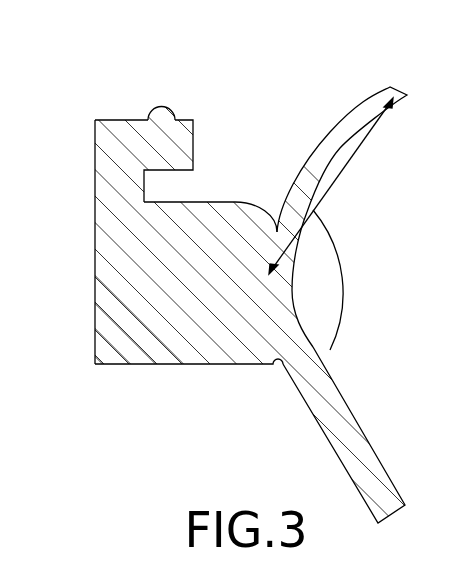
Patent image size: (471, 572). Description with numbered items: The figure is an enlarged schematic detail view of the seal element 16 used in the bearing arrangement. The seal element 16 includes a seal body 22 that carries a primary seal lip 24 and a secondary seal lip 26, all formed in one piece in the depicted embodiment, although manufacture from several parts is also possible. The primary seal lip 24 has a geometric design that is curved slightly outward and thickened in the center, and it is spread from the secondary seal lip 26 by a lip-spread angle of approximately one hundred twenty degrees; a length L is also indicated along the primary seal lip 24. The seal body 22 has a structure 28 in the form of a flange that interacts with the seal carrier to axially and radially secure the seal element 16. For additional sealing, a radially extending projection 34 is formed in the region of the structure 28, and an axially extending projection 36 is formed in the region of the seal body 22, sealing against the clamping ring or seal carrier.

The seal element 16 is at (234, 97).
The seal body 22 is at (138, 320).
The primary seal lip 24 is at (338, 128).
The secondary seal lip 26 is at (375, 485).
The structure 28 is at (148, 150).
The radially extending projection 34 is at (160, 112).
The axially extending projection 36 is at (93, 154).
The length of fin L is at (345, 165).